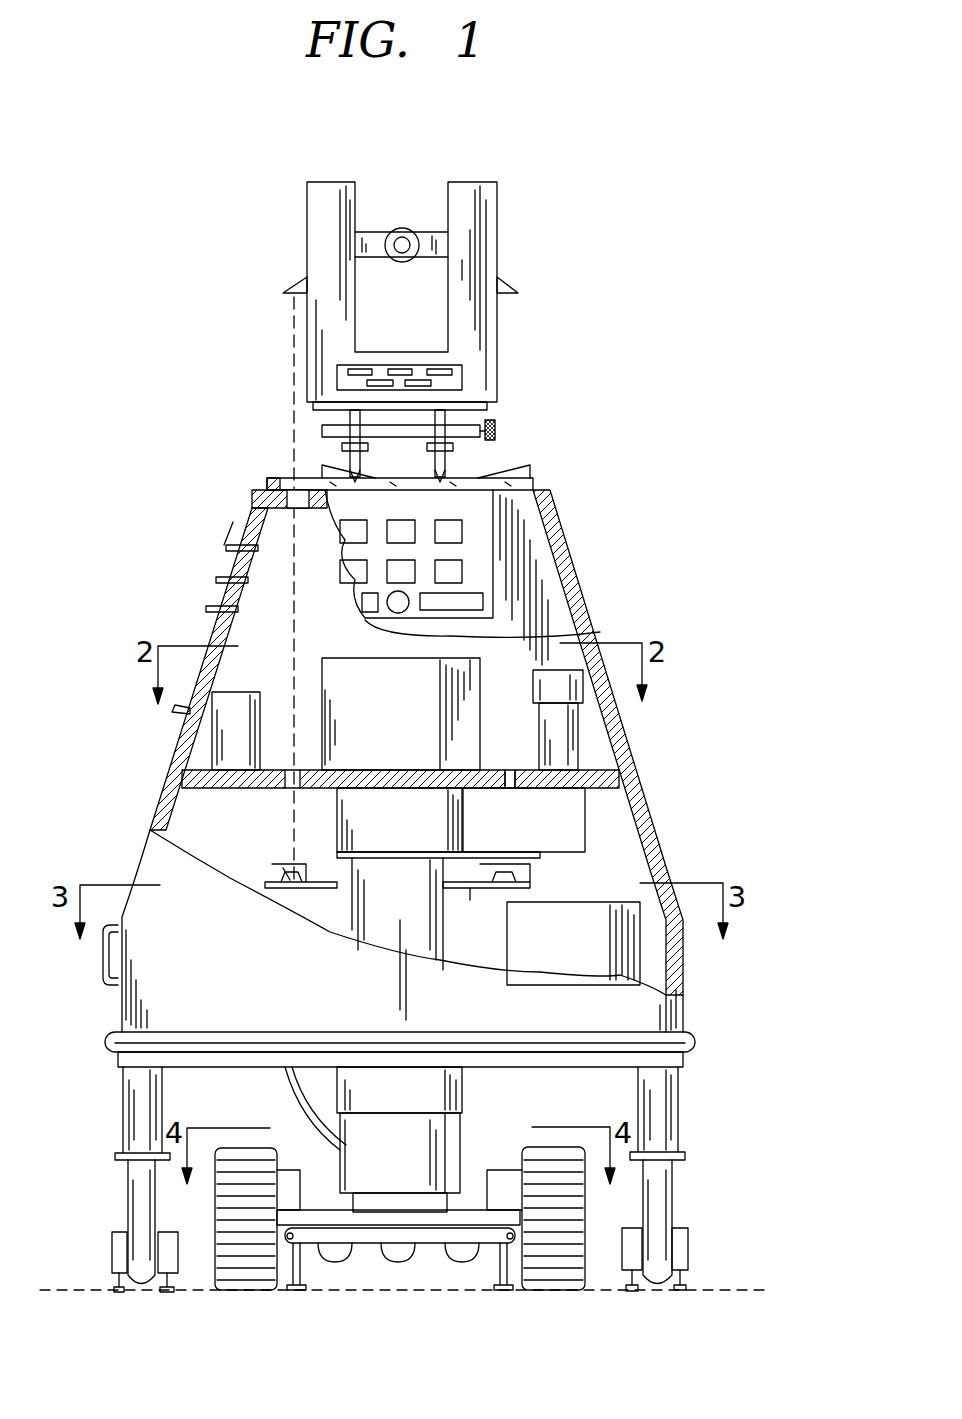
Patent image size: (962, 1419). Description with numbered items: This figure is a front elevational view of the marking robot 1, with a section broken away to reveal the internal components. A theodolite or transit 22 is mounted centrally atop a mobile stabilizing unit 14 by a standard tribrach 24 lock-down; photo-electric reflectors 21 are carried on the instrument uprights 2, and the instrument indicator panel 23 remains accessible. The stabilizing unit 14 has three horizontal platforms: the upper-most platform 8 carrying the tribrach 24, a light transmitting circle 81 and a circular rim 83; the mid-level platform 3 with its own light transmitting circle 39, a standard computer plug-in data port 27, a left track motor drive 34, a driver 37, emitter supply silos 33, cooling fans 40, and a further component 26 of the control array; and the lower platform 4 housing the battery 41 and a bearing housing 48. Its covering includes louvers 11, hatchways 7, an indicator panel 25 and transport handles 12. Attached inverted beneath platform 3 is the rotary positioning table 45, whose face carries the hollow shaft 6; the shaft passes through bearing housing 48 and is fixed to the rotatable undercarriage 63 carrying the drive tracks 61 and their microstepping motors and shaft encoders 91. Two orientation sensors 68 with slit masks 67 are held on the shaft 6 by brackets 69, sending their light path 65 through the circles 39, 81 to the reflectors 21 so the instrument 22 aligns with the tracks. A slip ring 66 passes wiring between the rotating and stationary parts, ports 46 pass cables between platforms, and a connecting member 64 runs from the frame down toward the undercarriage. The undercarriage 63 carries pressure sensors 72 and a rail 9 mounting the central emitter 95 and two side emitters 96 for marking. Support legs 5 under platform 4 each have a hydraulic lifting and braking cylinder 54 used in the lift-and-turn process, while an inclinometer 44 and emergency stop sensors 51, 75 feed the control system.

The mobile robot apparatus 1 is at (603, 192).
The instrument uprights 2 is at (487, 200).
The mid-level platform 3 is at (610, 783).
The lower level support platform 4 is at (613, 1068).
The support legs 5 is at (665, 1125).
The hollow shaft 6 is at (390, 930).
The ports or hatchways 7 is at (205, 640).
The upper-most platform 8 is at (275, 505).
The rail or bar 9 is at (432, 1240).
The louvers or ventilation ducts 11 is at (230, 552).
The transport and maneuvering handles 12 is at (103, 955).
The mobile stabilizing unit 14 is at (540, 530).
The photo-electric reflectors 21 is at (508, 282).
The theodolite or transit 22 is at (402, 228).
The instrument indicator panel 23 is at (460, 380).
The tribrach 24 is at (322, 430).
The panel 25 is at (505, 478).
The slot 26 is at (480, 602).
The RS 232 port 27 is at (420, 590).
The emitter supply silos 33 is at (228, 745).
The left track motor drive 34 is at (370, 680).
The driver 37 is at (565, 745).
The light transmitting circle 39 is at (505, 765).
The fans 40 is at (573, 690).
The battery 41 is at (608, 948).
The inclinometer 44 is at (480, 1185).
The rotary positioning table 45 is at (567, 826).
The ports 46 is at (530, 778).
The bearing housing 48 is at (412, 1080).
The emergency stop sensors 51 is at (688, 1245).
The lifting and braking mechanism 54 is at (165, 1230).
The drive tracks 61 is at (577, 1245).
The rotatable undercarriage 63 is at (370, 1225).
The strut 64 is at (292, 1090).
The light path 65 is at (298, 335).
The slip ring 66 is at (445, 1140).
The slit masks 67 is at (290, 865).
The orientation sensors 68 is at (295, 885).
The brackets 69 is at (470, 890).
The pressure sensors 72 is at (300, 1290).
The emergency stop sensor 75 is at (110, 1040).
The light transmitting circle 81 is at (290, 487).
The circular rim 83 is at (268, 487).
The microstepping motors and incremental shaft encoders 91 is at (300, 1180).
The central emitter or jet 95 is at (395, 1262).
The emitters 96 is at (462, 1262).